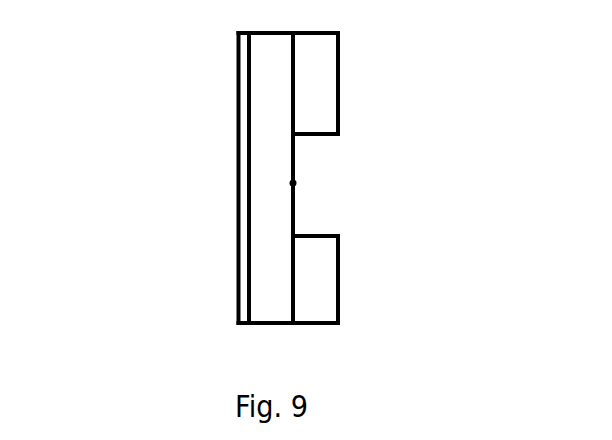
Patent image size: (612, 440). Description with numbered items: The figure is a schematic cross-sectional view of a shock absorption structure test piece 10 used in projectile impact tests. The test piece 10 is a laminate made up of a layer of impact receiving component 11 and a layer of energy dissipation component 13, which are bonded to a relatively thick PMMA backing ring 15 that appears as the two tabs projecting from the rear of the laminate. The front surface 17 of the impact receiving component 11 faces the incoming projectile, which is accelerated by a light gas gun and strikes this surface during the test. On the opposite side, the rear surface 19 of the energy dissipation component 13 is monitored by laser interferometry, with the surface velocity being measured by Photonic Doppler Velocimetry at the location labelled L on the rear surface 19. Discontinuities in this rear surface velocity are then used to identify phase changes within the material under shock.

The shock absorption structure test piece 10 is at (108, 42).
The impact receiving component 11 is at (245, 158).
The energy dissipation component 13 is at (272, 100).
The PMMA backing ring 15 is at (330, 88).
The front surface 17 is at (235, 195).
The rear surface 19 is at (291, 206).
The measurement location L is at (296, 183).